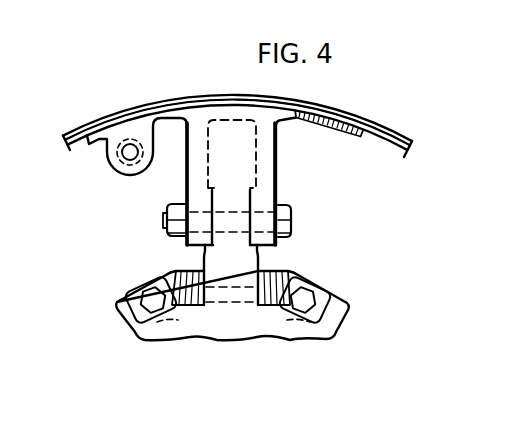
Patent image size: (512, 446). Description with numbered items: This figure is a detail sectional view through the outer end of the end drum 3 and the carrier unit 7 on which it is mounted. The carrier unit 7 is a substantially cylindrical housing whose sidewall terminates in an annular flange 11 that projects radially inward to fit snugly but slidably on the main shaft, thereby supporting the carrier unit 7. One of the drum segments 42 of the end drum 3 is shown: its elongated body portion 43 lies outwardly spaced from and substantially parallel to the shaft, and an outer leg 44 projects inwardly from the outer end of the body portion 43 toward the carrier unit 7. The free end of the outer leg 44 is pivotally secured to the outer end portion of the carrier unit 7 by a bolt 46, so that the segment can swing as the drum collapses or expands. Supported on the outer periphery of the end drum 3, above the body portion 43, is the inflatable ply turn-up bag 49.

The end drum 3 is at (277, 157).
The carrier unit 7 is at (173, 278).
The annular flange 11 is at (200, 258).
The drum segment 42 is at (297, 113).
The body portion 43 is at (347, 126).
The outer leg 44 is at (278, 189).
The bolt 46 is at (290, 236).
The inflatable ply turn-up bag 49 is at (394, 136).